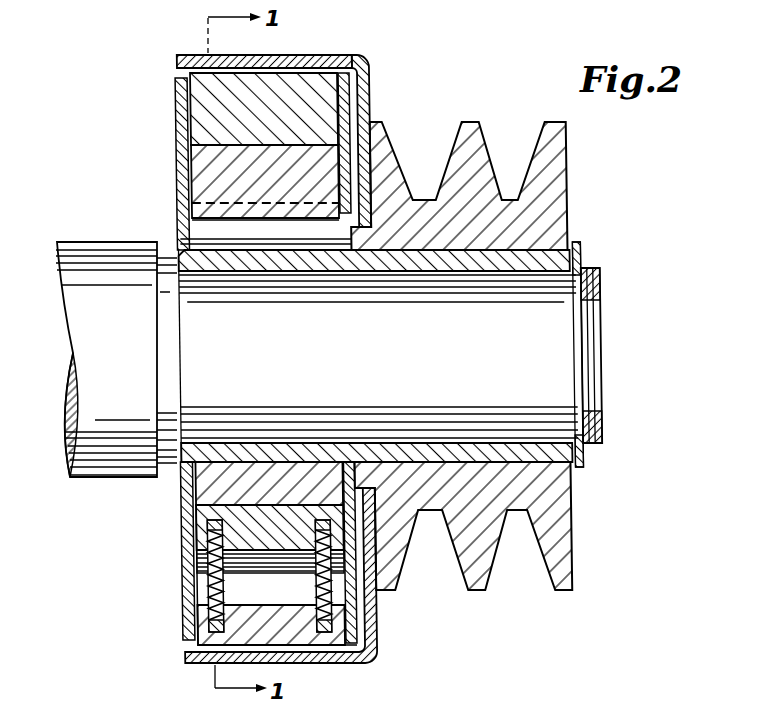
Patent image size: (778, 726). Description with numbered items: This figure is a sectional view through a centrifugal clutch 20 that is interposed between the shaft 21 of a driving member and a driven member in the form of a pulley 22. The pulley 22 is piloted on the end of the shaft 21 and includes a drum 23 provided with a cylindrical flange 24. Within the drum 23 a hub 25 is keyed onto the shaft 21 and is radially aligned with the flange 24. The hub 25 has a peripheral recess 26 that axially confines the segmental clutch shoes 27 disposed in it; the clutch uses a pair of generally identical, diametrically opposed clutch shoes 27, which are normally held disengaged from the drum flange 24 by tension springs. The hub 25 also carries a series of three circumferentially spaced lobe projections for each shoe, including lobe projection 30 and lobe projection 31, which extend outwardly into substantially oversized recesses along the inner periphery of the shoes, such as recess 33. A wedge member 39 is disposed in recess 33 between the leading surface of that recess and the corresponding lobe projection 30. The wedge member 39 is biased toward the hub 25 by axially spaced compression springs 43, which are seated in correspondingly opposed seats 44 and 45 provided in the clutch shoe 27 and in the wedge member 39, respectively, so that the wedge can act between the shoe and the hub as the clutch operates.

The centrifugal clutch 20 is at (370, 61).
The shaft 21 is at (133, 376).
The pulley 22 is at (553, 189).
The drum 23 is at (296, 54).
The cylindrical flange 24 is at (195, 53).
The hub 25 is at (198, 210).
The peripheral recess 26 is at (193, 107).
The clutch shoes 27 is at (313, 78).
The lobe projection 30 is at (270, 567).
The lobe projection 31 is at (202, 163).
The recess 33 is at (303, 593).
The wedge member 39 is at (228, 510).
The compression springs 43 is at (208, 588).
The seat 44 is at (210, 620).
The seat 45 is at (210, 533).